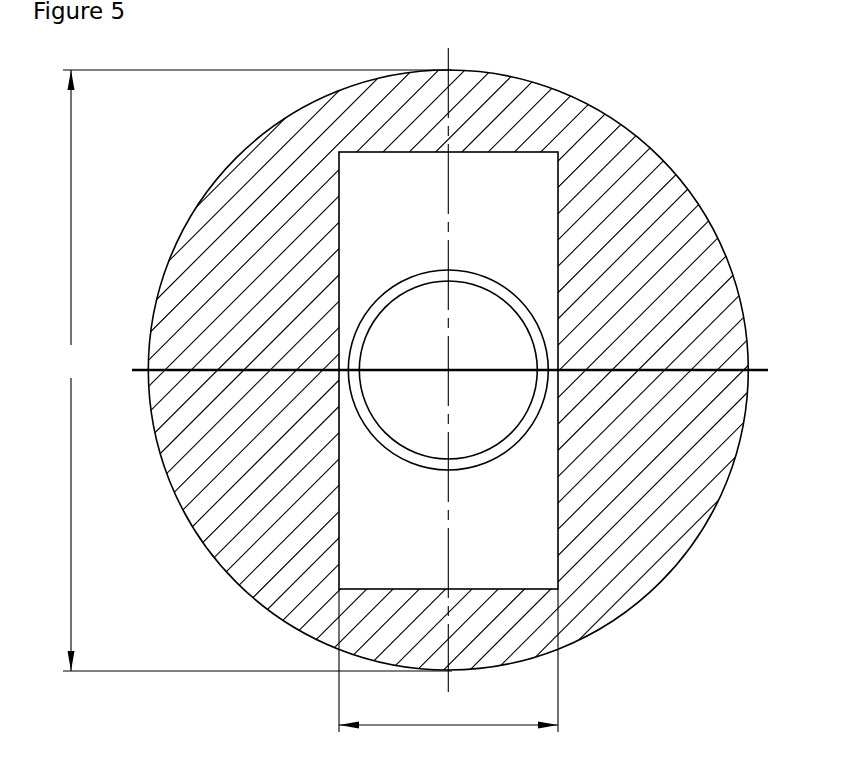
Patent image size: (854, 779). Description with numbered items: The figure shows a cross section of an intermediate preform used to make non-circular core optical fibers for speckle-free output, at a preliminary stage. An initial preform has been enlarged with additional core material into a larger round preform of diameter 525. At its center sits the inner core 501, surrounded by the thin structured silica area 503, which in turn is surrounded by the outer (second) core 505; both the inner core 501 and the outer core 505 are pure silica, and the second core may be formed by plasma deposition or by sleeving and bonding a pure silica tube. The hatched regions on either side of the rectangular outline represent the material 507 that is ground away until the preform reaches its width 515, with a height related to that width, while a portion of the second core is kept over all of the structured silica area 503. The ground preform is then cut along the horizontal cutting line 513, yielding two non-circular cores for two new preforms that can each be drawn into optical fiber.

The inner core 501 is at (448, 370).
The structured silica area 503 is at (475, 461).
The outer (second) core 505 is at (448, 370).
The removed material 507 is at (657, 553).
The cutting line 513 is at (474, 370).
The width 515 is at (448, 660).
The diameter 525 is at (249, 370).